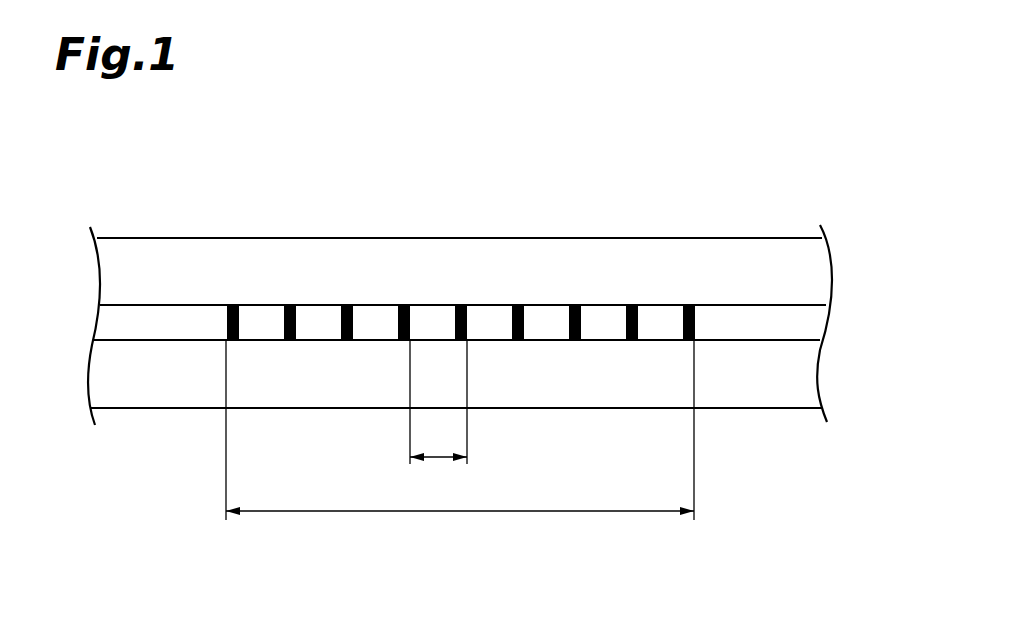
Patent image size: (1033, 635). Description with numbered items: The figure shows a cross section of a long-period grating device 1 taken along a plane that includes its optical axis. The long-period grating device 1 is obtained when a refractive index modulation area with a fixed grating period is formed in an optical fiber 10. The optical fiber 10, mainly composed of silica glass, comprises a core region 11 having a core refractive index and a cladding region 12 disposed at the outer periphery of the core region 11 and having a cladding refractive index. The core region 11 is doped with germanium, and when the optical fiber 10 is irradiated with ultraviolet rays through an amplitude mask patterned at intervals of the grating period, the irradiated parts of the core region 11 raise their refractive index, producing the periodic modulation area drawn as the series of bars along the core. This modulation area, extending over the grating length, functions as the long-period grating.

The long-period grating device 1 is at (434, 219).
The optical fiber 10 is at (252, 237).
The core region 11 is at (145, 318).
The cladding region 12 is at (185, 267).